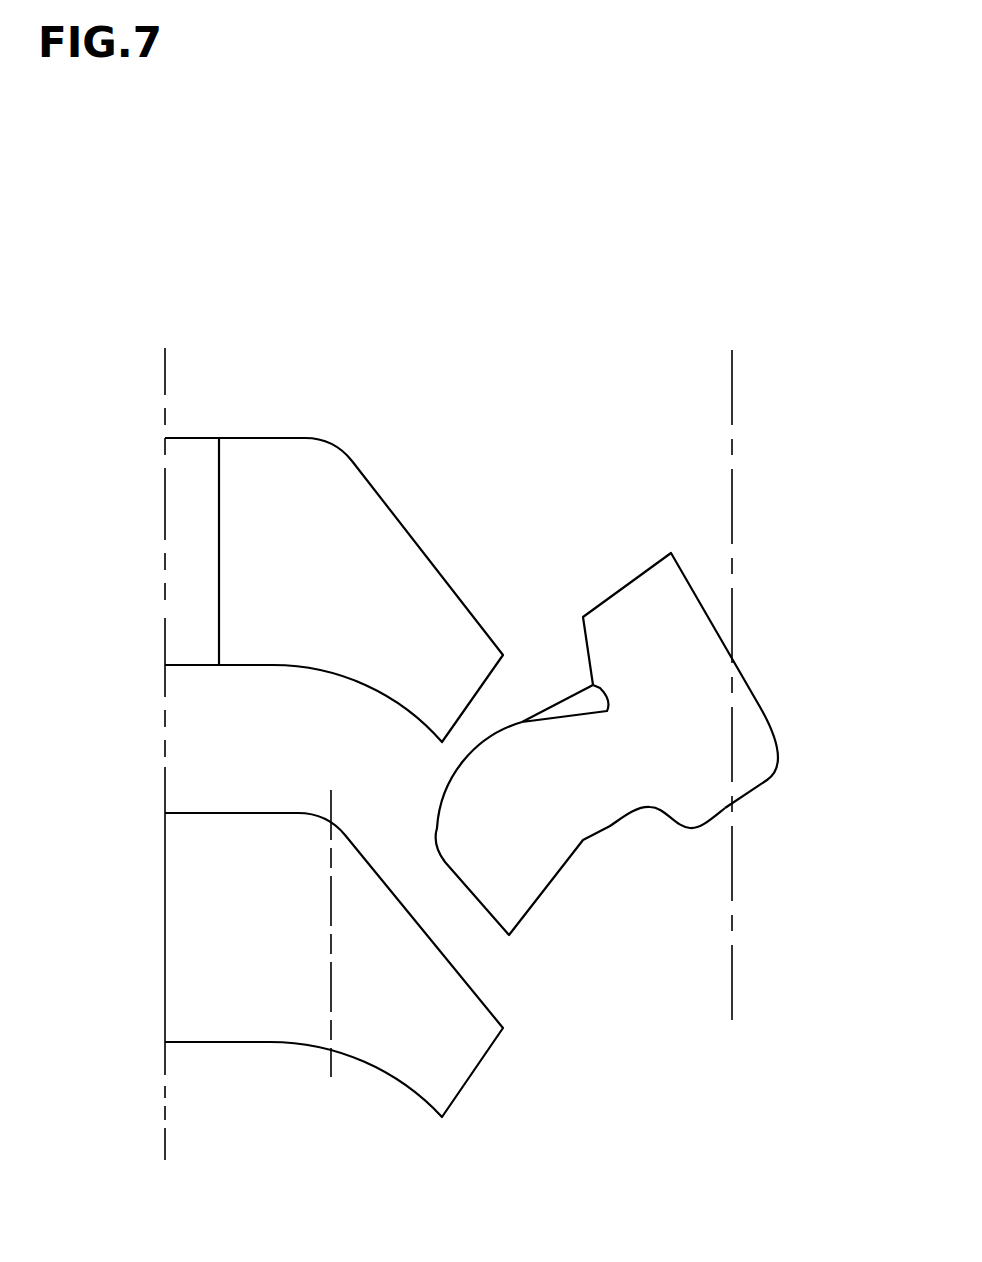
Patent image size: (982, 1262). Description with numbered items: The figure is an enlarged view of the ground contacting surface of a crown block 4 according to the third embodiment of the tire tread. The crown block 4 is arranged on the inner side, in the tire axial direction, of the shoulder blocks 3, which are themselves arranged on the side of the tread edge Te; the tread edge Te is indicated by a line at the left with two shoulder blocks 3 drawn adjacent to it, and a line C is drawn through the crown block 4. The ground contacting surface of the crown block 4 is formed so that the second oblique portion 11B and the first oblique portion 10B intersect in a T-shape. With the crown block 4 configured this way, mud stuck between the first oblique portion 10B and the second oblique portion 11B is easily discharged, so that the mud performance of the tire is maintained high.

The shoulder block 3 is at (292, 560).
The crown block 4 is at (660, 748).
The first oblique portion 10B is at (527, 847).
The second oblique portion 11B is at (682, 633).
The tread edge Te is at (165, 373).
The center line C is at (731, 669).